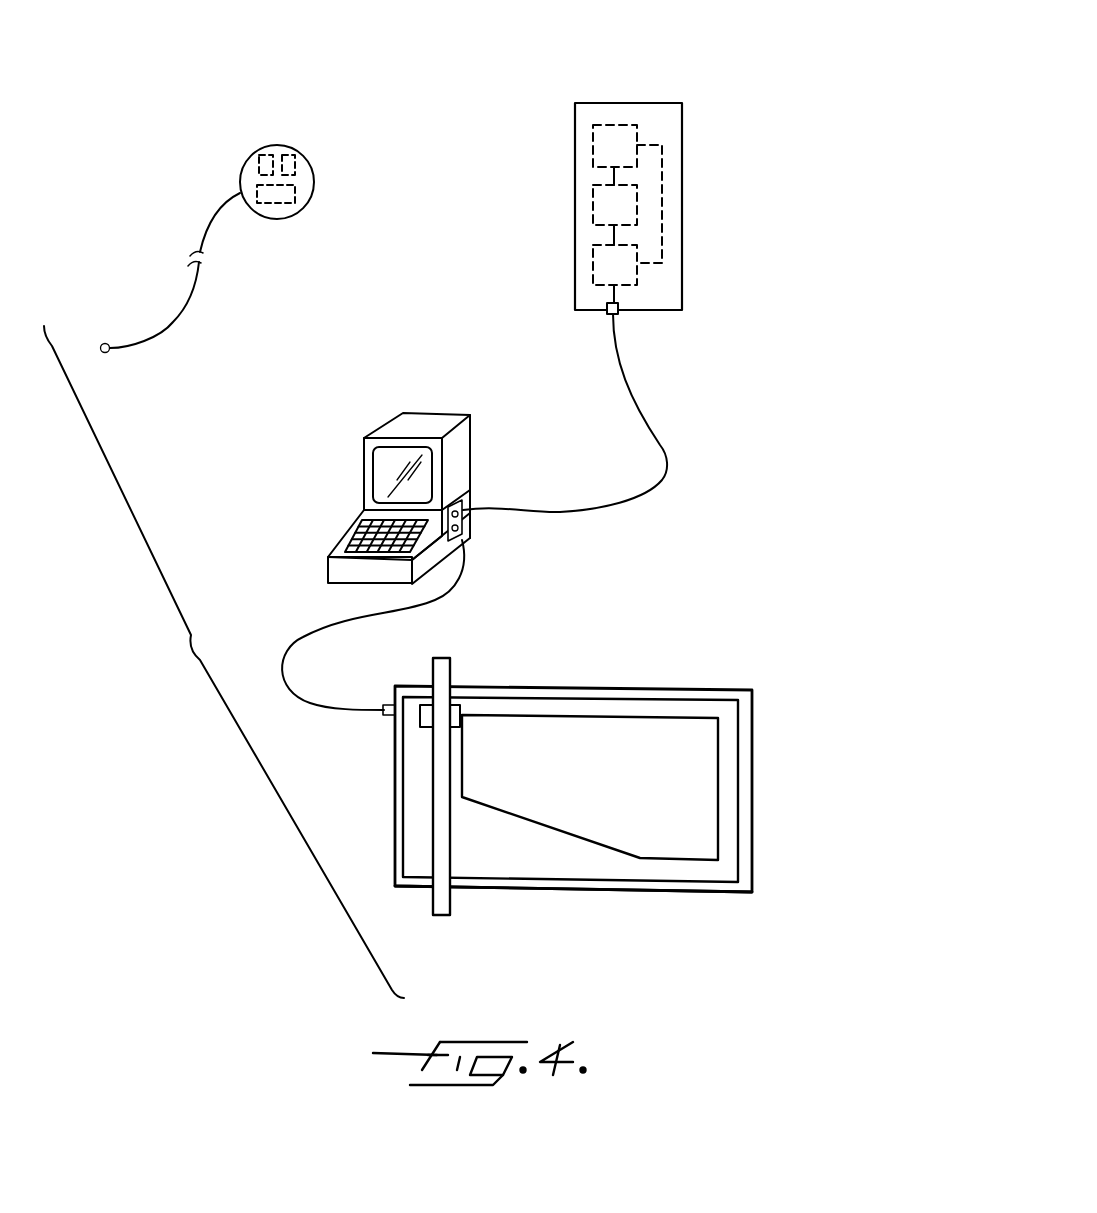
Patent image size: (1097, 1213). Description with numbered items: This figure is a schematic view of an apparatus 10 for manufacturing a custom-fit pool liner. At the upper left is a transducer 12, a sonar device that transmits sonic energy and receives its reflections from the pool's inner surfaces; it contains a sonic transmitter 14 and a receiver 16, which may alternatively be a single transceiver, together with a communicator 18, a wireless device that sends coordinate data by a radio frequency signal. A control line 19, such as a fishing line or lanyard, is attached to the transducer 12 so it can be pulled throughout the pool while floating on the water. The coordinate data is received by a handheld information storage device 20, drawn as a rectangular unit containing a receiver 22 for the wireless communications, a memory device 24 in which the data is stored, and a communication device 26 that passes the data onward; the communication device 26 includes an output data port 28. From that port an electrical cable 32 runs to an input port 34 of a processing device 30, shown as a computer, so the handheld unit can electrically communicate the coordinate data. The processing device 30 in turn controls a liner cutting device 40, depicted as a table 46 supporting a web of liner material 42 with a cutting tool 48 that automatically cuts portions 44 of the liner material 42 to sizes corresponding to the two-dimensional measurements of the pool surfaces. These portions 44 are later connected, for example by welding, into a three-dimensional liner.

The apparatus 10 is at (702, 68).
The transducer 12 is at (232, 166).
The sonic transmitter 14 is at (258, 156).
The receiver 16 is at (288, 160).
The communicator 18 is at (275, 204).
The control line 19 is at (173, 320).
The handheld information storage device 20 is at (690, 186).
The receiver 22 is at (593, 147).
The memory device 24 is at (593, 207).
The communication device 26 is at (593, 267).
The output data port 28 is at (618, 316).
The processing device 30 is at (356, 527).
The electrical cable 32 is at (667, 461).
The input port 34 is at (463, 520).
The liner cutting device 40 is at (666, 678).
The liner material 42 is at (735, 760).
The portions 44 is at (712, 823).
The table 46 is at (563, 890).
The cutting tool 48 is at (456, 712).